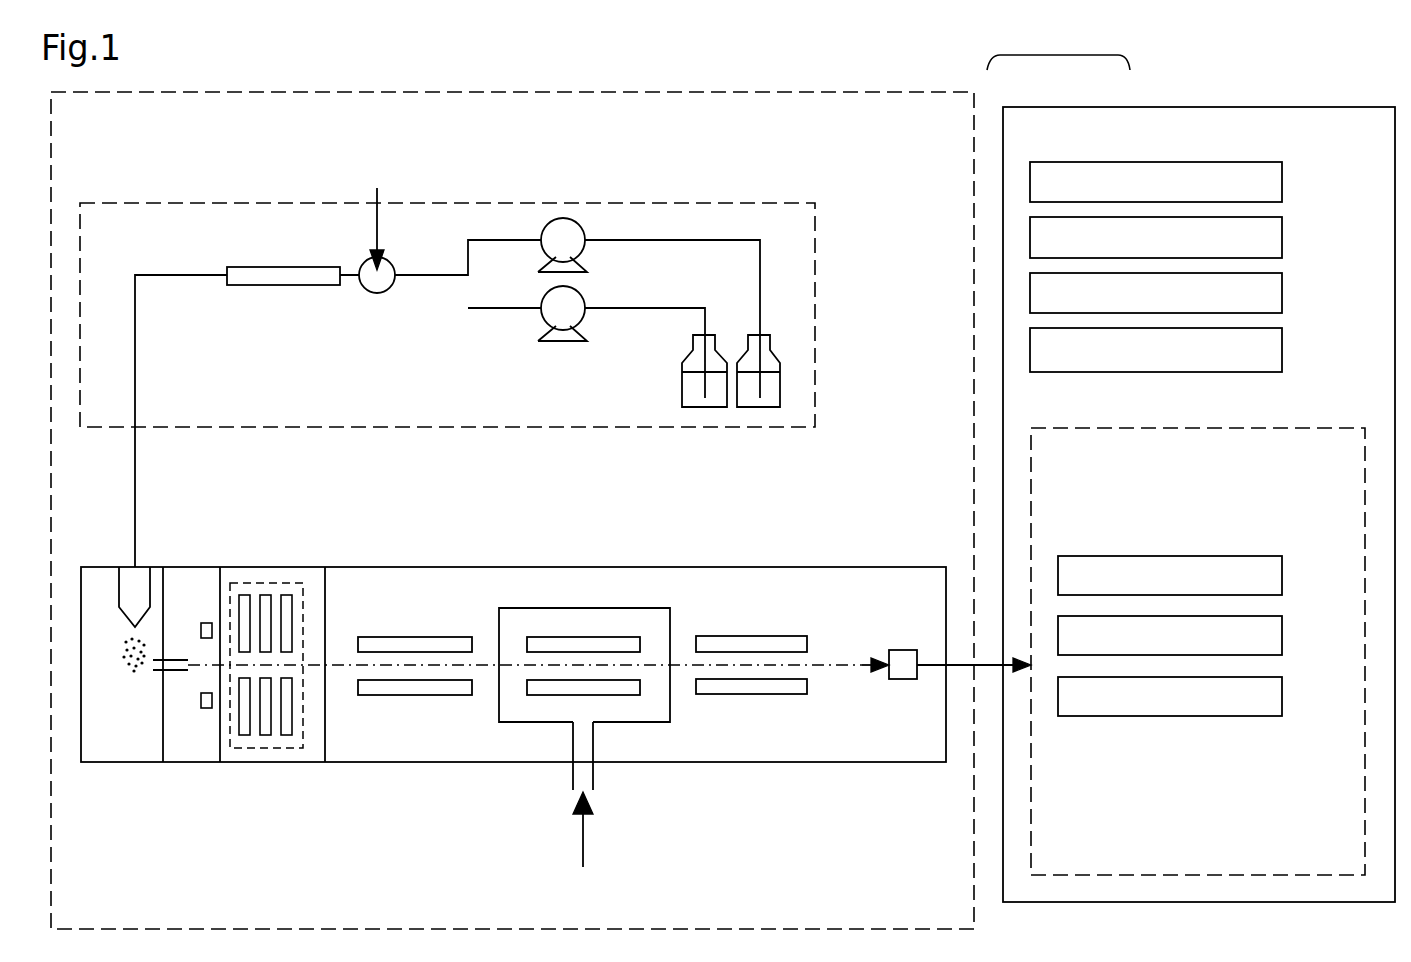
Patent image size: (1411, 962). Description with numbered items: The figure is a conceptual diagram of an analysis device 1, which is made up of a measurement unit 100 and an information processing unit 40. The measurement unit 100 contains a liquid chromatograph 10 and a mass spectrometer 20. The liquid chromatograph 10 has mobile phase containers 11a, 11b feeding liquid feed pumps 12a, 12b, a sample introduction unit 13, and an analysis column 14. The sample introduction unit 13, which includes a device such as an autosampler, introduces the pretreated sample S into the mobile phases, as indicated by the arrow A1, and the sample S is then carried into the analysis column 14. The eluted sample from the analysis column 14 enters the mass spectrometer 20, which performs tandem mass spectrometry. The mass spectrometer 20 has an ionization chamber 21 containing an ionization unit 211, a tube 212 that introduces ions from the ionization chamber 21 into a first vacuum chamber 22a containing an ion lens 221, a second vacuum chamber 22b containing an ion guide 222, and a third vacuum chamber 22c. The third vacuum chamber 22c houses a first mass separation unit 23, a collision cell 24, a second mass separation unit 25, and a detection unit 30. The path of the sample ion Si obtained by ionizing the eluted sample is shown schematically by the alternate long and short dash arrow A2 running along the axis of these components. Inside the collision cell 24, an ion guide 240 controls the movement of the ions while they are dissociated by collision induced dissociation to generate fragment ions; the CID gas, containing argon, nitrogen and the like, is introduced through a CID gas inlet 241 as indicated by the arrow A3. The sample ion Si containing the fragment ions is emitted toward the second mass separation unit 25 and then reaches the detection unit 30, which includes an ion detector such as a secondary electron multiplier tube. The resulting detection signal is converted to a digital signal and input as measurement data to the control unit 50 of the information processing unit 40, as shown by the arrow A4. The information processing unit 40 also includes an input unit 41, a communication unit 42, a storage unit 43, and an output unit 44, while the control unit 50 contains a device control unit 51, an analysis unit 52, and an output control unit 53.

The analysis device 1 is at (1058, 55).
The measurement unit 100 is at (966, 105).
The information processing unit 40 is at (1058, 107).
The input unit 41 is at (1282, 182).
The communication unit 42 is at (1282, 237).
The storage unit 43 is at (1282, 294).
The output unit 44 is at (1282, 350).
The control unit 50 is at (1085, 427).
The device control unit 51 is at (1282, 568).
The analysis unit 52 is at (1282, 629).
The output control unit 53 is at (1282, 693).
The liquid chromatograph 10 is at (137, 203).
The analysis column 14 is at (250, 275).
The sample introduction unit 13 is at (388, 283).
The liquid feed pump 12a is at (562, 338).
The liquid feed pump 12b is at (573, 232).
The mobile phase container 11a is at (696, 396).
The mobile phase container 11b is at (768, 396).
The mass spectrometer 20 is at (879, 472).
The ionization chamber 21 is at (100, 572).
The ionization unit 211 is at (148, 580).
The tube 212 is at (175, 673).
The first vacuum chamber 22a is at (203, 585).
The second vacuum chamber 22b is at (277, 578).
The third vacuum chamber 22c is at (350, 578).
The ion lens 221 is at (208, 710).
The ion guide 222 is at (277, 737).
The first mass separation unit 23 is at (442, 638).
The collision cell 24 is at (528, 625).
The ion guide 240 is at (625, 640).
The CID gas inlet 241 is at (597, 727).
The second mass separation unit 25 is at (787, 637).
The detection unit 30 is at (905, 680).
The sample S is at (377, 212).
The sample ion Si is at (138, 673).
The arrow A1 is at (380, 225).
The arrow A2 is at (866, 668).
The arrow A3 is at (583, 830).
The arrow A4 is at (953, 662).